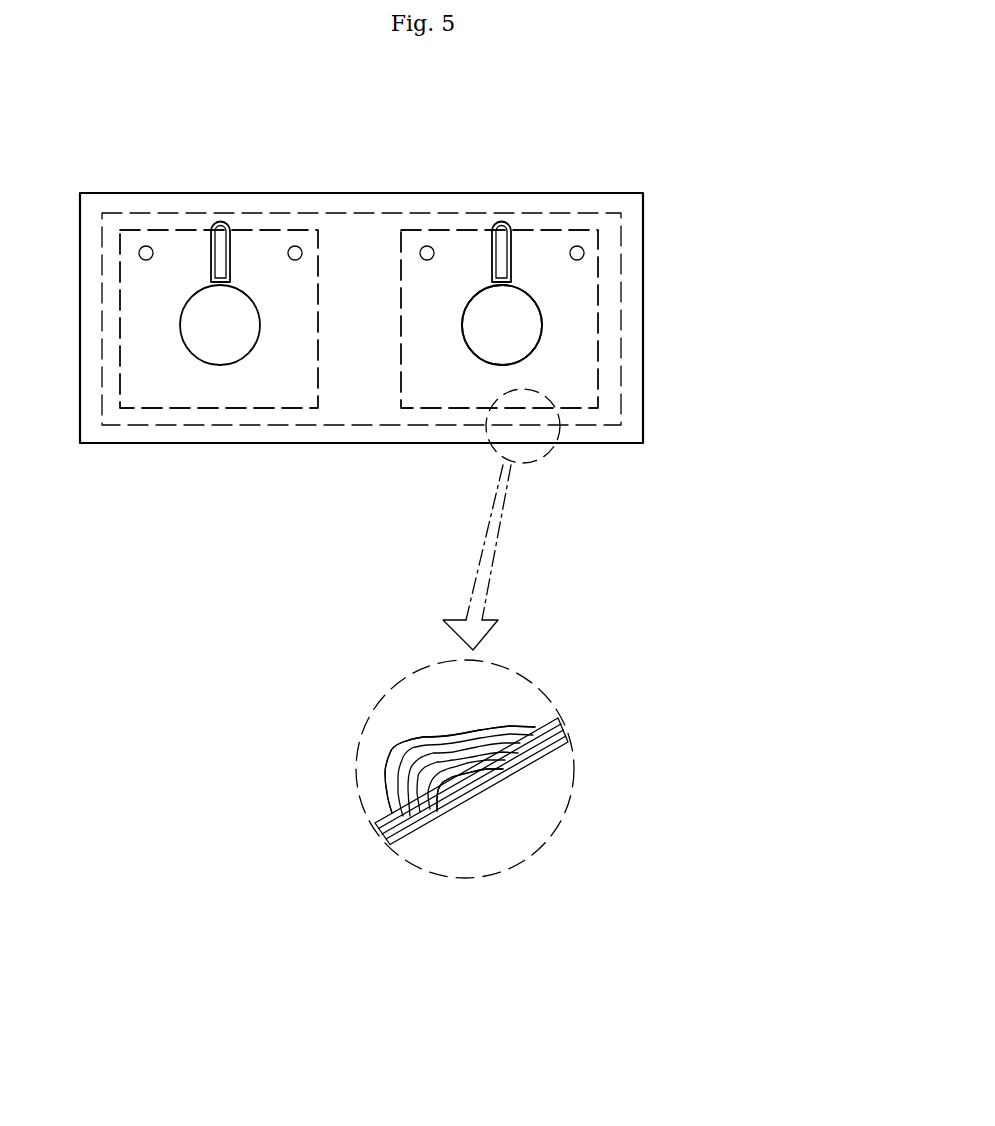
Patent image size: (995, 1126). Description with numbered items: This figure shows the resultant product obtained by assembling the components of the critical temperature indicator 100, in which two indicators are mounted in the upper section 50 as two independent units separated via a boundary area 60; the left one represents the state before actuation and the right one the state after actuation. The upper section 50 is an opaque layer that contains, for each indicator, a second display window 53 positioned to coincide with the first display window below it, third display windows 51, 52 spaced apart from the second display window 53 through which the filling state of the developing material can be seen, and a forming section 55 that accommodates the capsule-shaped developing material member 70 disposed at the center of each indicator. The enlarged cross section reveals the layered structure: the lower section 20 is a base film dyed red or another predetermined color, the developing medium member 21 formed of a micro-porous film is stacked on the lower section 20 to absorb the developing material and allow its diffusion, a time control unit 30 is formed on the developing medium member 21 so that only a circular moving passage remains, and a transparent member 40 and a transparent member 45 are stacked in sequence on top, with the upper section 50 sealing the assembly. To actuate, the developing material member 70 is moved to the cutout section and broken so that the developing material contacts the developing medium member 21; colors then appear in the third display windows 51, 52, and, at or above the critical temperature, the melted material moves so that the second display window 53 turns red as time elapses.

The upper section 50 is at (600, 342).
The third display window 51 is at (146, 246).
The third display window 52 is at (296, 246).
The second display window 53 is at (224, 224).
The forming section 55 is at (538, 302).
The boundary area 60 is at (450, 230).
The developing material member 70 is at (203, 336).
The critical temperature indicator 100 is at (130, 387).
The lower section 20 is at (453, 795).
The developing medium member 21 is at (507, 762).
The time control unit 30 is at (662, 860).
The transparent member 40 is at (454, 854).
The transparent member 45 is at (415, 840).